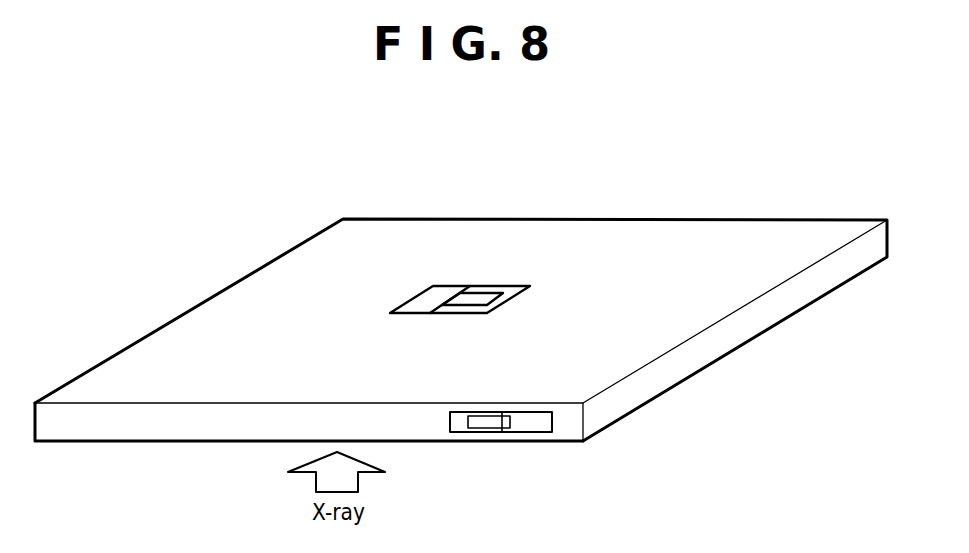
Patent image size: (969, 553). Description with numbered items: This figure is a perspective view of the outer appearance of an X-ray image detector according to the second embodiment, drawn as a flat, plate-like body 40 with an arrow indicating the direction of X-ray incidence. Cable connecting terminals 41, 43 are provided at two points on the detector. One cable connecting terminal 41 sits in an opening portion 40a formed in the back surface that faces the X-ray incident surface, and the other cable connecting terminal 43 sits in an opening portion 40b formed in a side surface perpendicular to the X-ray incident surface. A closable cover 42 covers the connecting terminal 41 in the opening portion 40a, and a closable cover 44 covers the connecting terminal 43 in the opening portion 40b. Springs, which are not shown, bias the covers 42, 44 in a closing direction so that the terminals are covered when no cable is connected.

The sensor housing 40 is at (680, 362).
The opening portion 40a is at (450, 418).
The opening portion 40b is at (512, 286).
The cable connecting terminal 41 is at (486, 428).
The closable cover 42 is at (535, 422).
The cable connecting terminal 43 is at (481, 294).
The closable cover 44 is at (435, 300).